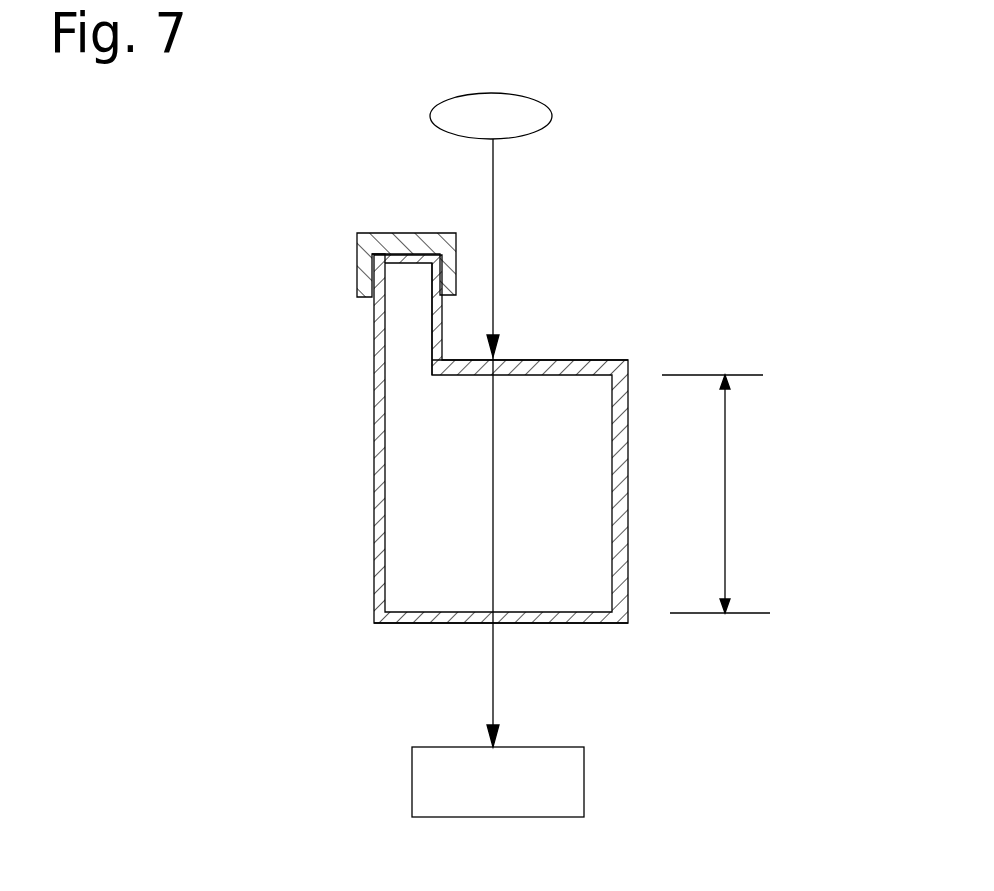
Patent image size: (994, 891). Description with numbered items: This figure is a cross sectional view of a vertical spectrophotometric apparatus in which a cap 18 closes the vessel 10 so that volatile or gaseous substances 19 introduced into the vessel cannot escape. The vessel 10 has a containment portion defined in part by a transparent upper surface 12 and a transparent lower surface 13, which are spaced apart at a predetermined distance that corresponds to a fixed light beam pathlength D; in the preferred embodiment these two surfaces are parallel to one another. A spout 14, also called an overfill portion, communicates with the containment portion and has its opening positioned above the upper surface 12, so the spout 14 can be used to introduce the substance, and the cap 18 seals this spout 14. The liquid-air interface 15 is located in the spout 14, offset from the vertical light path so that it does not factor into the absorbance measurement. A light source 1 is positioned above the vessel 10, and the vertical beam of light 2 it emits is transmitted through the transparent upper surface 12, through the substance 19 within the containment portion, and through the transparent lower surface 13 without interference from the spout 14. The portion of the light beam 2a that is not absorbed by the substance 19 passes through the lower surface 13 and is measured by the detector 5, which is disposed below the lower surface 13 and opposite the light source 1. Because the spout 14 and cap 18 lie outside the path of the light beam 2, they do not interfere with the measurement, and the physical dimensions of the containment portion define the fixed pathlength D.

The light source 1 is at (530, 95).
The vertical beam of light 2 is at (493, 235).
The light beam 2a is at (494, 690).
The detector 5 is at (584, 787).
The vessel 10 is at (379, 580).
The transparent upper surface 12 is at (612, 366).
The transparent lower surface 13 is at (587, 618).
The spout 14 is at (376, 254).
The liquid-air interface 15 is at (432, 301).
The cap 18 is at (400, 234).
The volatile or gaseous substance 19 is at (550, 455).
The fixed light beam pathlength D is at (725, 497).